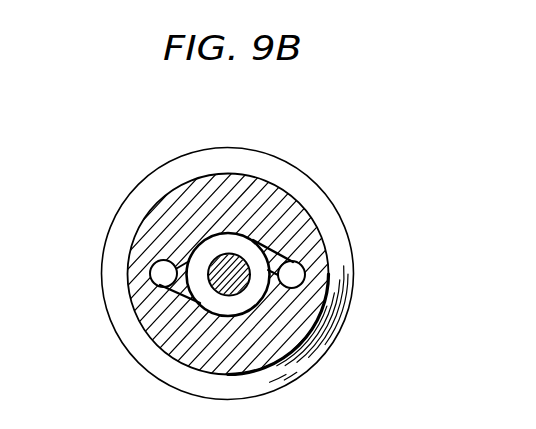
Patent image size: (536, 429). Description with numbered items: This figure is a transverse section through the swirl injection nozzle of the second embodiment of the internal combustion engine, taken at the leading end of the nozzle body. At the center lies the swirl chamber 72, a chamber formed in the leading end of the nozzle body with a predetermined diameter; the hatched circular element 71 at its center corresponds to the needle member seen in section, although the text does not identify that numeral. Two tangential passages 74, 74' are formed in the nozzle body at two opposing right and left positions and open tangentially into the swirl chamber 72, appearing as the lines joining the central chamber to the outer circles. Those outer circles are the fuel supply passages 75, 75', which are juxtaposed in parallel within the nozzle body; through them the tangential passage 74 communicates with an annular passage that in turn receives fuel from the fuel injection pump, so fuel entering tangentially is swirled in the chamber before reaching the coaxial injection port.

The shaft 71 is at (237, 276).
The swirl chamber 72 is at (228, 242).
The tangential passage 74 is at (322, 226).
The tangential passage 74' is at (141, 315).
The fuel supply passage 75 is at (341, 267).
The fuel supply passage 75' is at (123, 239).